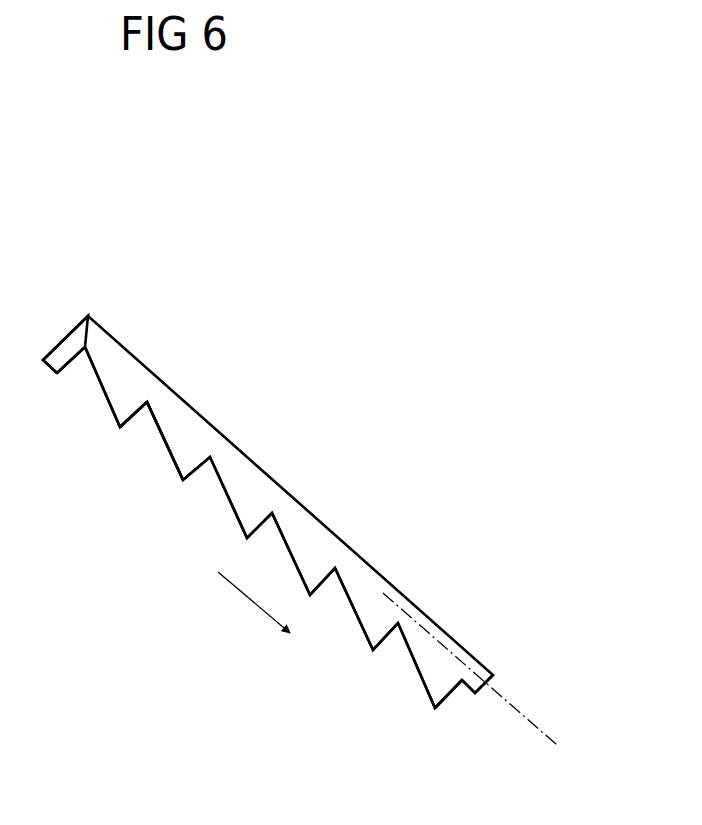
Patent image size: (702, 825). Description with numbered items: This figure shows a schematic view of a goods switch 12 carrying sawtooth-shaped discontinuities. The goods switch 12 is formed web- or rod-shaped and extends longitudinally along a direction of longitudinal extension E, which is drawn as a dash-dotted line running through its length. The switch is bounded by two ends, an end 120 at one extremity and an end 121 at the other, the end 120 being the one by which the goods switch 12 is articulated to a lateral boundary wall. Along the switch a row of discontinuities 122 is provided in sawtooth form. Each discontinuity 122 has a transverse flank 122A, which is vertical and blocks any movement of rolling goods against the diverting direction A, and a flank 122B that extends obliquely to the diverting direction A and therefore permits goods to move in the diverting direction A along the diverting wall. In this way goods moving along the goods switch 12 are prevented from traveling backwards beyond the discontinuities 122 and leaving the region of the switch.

The goods switch 12 is at (324, 515).
The end 120 is at (486, 668).
The end 121 is at (93, 340).
The discontinuity 122 is at (115, 435).
The transverse flank 122A is at (130, 484).
The flank 122B is at (167, 462).
The diverting direction A is at (254, 602).
The direction of longitudinal extension E is at (481, 683).